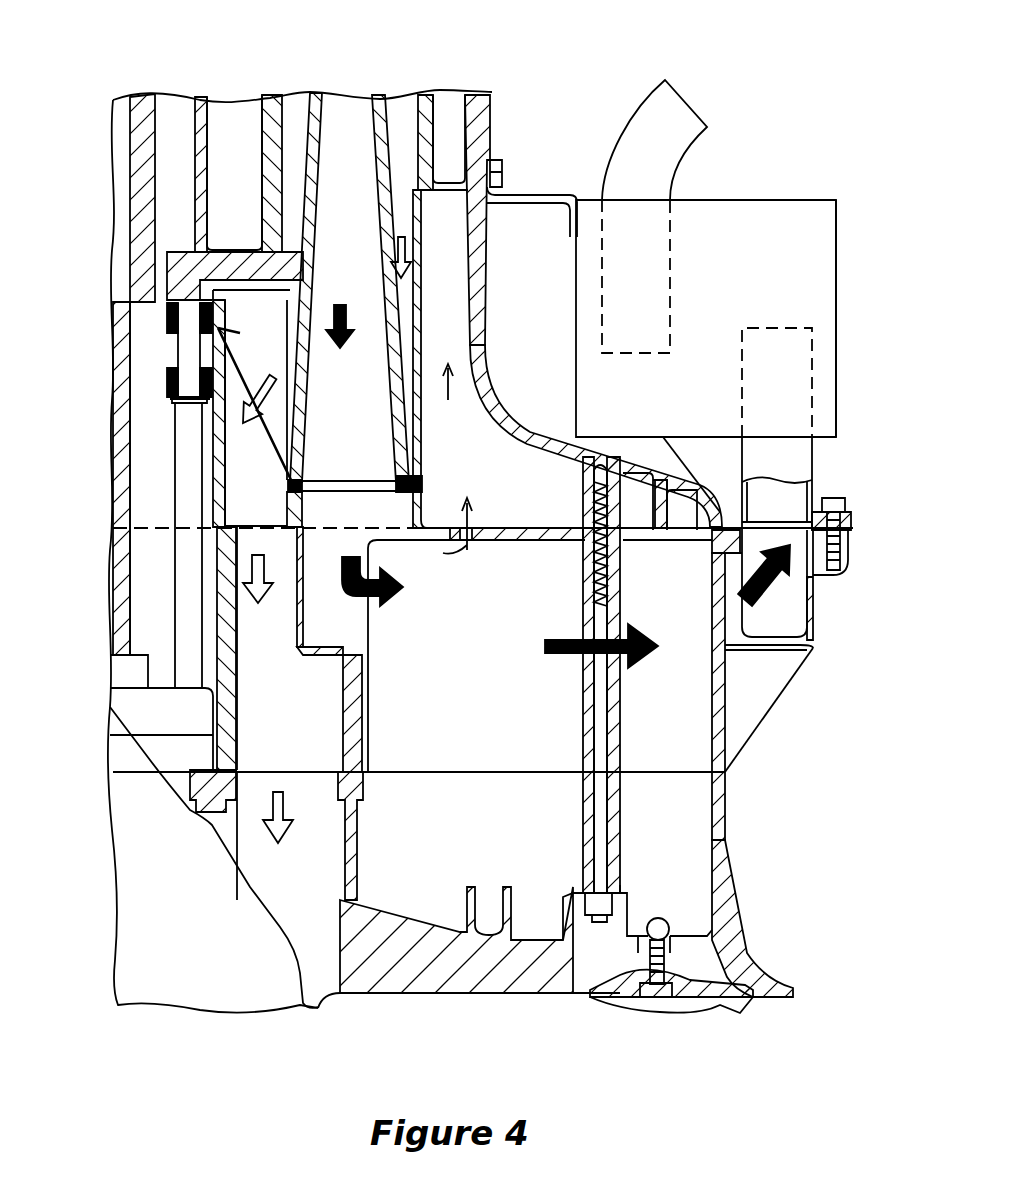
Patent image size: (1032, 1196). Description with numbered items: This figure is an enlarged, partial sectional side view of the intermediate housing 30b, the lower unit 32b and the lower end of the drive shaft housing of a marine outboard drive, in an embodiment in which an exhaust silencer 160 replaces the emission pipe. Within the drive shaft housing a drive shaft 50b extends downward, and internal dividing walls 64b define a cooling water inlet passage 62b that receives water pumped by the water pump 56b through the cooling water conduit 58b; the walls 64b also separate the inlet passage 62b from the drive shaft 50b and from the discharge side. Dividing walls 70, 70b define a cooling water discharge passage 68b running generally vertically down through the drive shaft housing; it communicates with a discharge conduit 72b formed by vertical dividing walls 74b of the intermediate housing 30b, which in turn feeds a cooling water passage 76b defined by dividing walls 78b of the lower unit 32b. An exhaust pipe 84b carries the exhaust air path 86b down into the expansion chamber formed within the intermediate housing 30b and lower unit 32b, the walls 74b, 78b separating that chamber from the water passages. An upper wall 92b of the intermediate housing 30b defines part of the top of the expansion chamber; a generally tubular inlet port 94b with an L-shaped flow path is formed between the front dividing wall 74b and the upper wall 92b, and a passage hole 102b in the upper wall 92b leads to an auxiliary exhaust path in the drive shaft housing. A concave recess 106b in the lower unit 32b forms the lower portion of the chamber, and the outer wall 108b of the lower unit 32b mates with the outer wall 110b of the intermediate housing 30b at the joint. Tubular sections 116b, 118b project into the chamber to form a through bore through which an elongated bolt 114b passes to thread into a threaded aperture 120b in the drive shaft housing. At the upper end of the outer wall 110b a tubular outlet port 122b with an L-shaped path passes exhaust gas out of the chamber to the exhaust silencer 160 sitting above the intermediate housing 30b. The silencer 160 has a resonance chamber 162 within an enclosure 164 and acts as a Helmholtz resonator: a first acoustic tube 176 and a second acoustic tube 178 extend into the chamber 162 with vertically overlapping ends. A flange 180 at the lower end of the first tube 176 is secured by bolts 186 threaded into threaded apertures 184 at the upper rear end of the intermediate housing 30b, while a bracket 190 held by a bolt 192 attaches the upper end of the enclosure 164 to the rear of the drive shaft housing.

The intermediate housing 30b is at (798, 693).
The lower unit 32b is at (766, 915).
The drive shaft 50b is at (113, 478).
The water pump 56b is at (146, 723).
The cooling water conduit 58b is at (185, 600).
The cooling water inlet passage 62b is at (257, 283).
The internal dividing walls 64b is at (277, 107).
The cooling water discharge passage 68b is at (405, 281).
The dividing walls 70 is at (228, 462).
The dividing walls 70b is at (393, 318).
The discharge conduit 72b is at (315, 733).
The dividing walls 74b is at (233, 673).
The cooling water passage 76b is at (317, 898).
The dividing walls 78b is at (358, 850).
The exhaust pipe 84b is at (364, 99).
The exhaust air path 86b is at (403, 341).
The upper wall 92b is at (520, 533).
The inlet port 94b is at (352, 623).
The passage hole 102b is at (492, 527).
The concave recess 106b is at (440, 925).
The outer wall 108b is at (735, 815).
The outer wall 110b is at (728, 742).
The bolt 114b is at (600, 750).
The tubular section 116b is at (620, 843).
The tubular section 118b is at (620, 550).
The threaded aperture 120b is at (566, 485).
The outlet port 122b is at (795, 616).
The exhaust silencer 160 is at (740, 192).
The resonance chamber 162 is at (792, 213).
The enclosure 164 is at (838, 247).
The first acoustic tube 176 is at (813, 466).
The second acoustic tube 178 is at (632, 107).
The flange 180 is at (847, 528).
The threaded apertures 184 is at (848, 565).
The bolts 186 is at (836, 500).
The bracket 190 is at (537, 195).
The bolt 192 is at (498, 160).